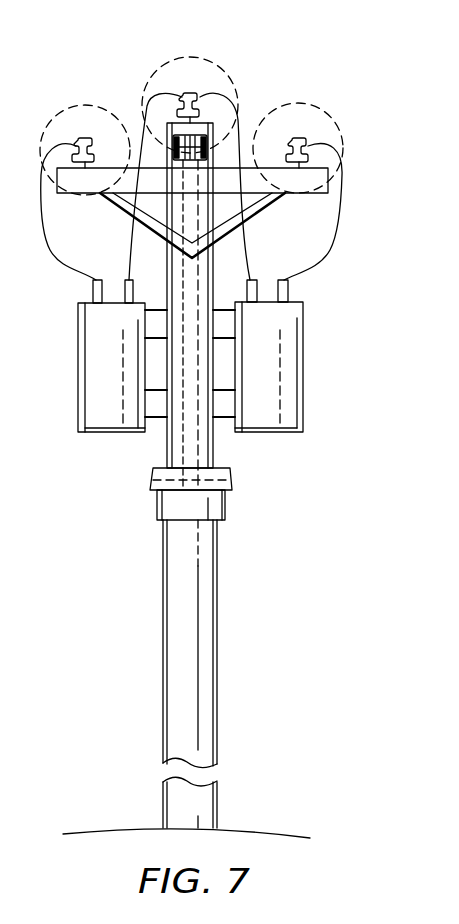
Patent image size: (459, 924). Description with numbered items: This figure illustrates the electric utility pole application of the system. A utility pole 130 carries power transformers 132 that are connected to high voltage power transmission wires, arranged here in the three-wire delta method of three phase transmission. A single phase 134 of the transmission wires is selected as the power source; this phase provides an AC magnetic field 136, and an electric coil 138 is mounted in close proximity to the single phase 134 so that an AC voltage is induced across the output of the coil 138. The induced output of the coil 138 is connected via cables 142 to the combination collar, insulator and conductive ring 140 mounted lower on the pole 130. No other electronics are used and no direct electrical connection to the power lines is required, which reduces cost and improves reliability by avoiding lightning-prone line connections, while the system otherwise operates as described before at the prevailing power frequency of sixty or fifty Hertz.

The utility pole 130 is at (163, 618).
The power transformers 132 is at (78, 385).
The single phase 134 is at (152, 102).
The AC magnetic field 136 is at (74, 106).
The electric coil 138 is at (251, 280).
The combination collar, insulator and conductive ring 140 is at (157, 505).
The cables 142 is at (184, 421).